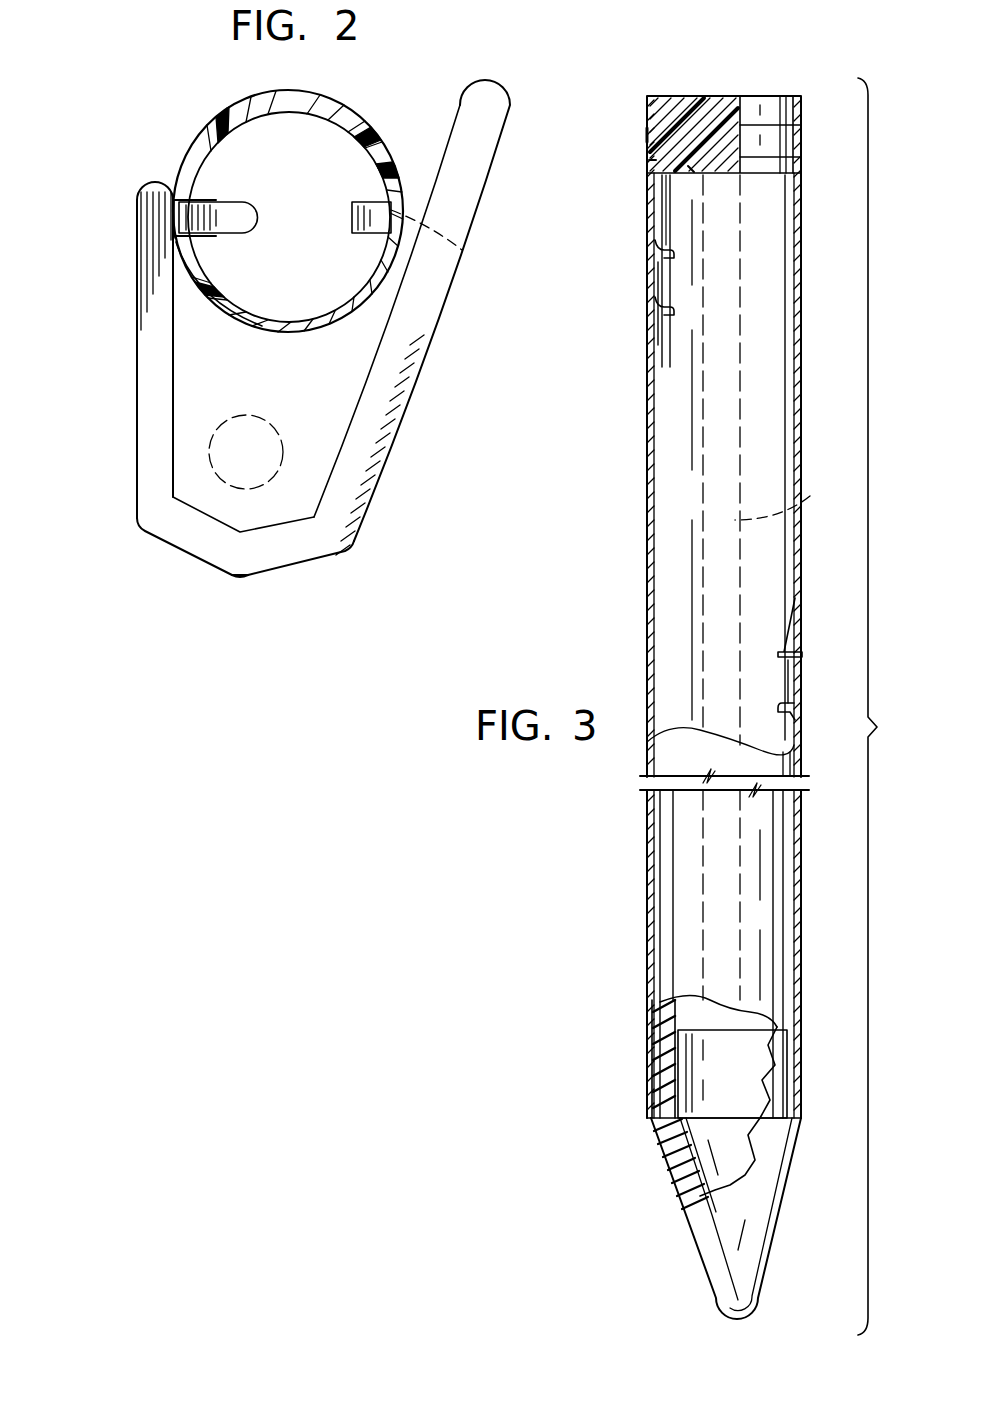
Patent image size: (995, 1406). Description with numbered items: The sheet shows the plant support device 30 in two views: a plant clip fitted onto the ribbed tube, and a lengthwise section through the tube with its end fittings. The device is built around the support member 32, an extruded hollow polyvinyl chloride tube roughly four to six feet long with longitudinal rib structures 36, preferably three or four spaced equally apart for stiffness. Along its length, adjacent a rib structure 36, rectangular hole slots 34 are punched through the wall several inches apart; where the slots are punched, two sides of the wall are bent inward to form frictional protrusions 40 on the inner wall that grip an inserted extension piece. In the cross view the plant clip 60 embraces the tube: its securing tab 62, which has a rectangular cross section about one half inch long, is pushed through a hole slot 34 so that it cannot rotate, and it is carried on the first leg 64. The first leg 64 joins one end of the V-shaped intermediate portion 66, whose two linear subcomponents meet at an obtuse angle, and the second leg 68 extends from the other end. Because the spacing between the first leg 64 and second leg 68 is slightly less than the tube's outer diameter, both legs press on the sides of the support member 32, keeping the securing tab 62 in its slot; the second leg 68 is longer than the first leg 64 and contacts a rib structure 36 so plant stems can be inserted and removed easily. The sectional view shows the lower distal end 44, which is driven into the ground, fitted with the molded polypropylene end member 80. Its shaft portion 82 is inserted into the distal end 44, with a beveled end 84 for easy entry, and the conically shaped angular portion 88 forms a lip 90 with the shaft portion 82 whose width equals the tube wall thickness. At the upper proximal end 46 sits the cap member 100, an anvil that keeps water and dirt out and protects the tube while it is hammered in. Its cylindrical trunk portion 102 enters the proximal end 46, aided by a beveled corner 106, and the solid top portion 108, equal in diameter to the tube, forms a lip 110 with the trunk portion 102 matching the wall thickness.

In FIG. 2, the plant support device 30 is at (176, 112).
In FIG. 3, the plant support device 30 is at (630, 518).
In FIG. 2, the support member 32 is at (368, 118).
In FIG. 3, the support member 32 is at (644, 572).
In FIG. 2, the hole slots 34 is at (66, 214).
In FIG. 3, the hole slots 34 is at (650, 293).
In FIG. 2, the rib structure 36 is at (300, 92).
In FIG. 3, the rib structure 36 is at (605, 871).
In FIG. 2, the frictional protrusions 40 is at (372, 208).
In FIG. 3, the frictional protrusions 40 is at (650, 262).
In FIG. 3, the distal end 44 is at (778, 1072).
In FIG. 3, the proximal end 46 is at (654, 160).
In FIG. 2, the plant clip 60 is at (390, 448).
In FIG. 2, the securing tab 62 is at (232, 212).
In FIG. 2, the first leg 64 is at (146, 384).
In FIG. 2, the intermediate portion 66 is at (202, 546).
In FIG. 2, the second leg 68 is at (420, 288).
In FIG. 3, the end member 80 is at (776, 1208).
In FIG. 3, the shaft portion 82 is at (668, 1068).
In FIG. 3, the beveled end 84 is at (660, 1040).
In FIG. 3, the angular portion 88 is at (694, 1253).
In FIG. 3, the lip 90 is at (652, 1112).
In FIG. 3, the cap member 100 is at (762, 94).
In FIG. 3, the trunk portion 102 is at (668, 186).
In FIG. 3, the beveled corner 106 is at (690, 170).
In FIG. 3, the top portion 108 is at (797, 100).
In FIG. 3, the lip 110 is at (648, 140).